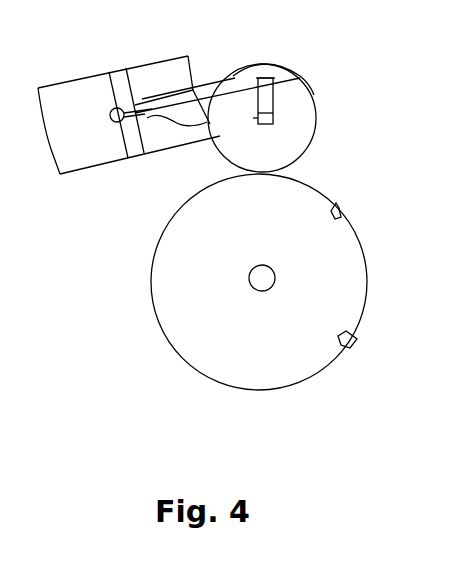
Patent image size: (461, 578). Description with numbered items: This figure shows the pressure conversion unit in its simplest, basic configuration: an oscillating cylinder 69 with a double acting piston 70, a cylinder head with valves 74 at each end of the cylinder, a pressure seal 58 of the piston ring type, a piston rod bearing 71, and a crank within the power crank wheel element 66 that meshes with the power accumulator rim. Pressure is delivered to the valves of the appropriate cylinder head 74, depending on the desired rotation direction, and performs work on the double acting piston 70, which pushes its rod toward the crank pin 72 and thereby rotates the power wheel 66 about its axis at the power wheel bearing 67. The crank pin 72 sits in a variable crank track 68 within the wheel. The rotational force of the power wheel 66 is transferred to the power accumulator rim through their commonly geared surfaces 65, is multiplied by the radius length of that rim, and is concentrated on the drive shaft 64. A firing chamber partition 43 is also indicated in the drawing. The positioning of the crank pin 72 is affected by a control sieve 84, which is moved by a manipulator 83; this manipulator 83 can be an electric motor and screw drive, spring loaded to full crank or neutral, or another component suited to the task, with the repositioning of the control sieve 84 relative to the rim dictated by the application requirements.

The firing chamber partition 43 is at (153, 263).
The pressure seal 58 is at (111, 113).
The drive shaft 64 is at (276, 278).
The geared surface 65 is at (247, 171).
The power crank wheel element 66 is at (307, 92).
The power wheel bearing 67 is at (277, 118).
The variable crank track 68 is at (300, 75).
The oscillating cylinder 69 is at (86, 165).
The piston 70 is at (153, 63).
The piston rod bearing 71 is at (246, 67).
The crank pin 72 is at (295, 62).
The cylinder head with valves 74 is at (52, 157).
The manipulator for control sieve movement 83 is at (358, 340).
The control sieve 84 is at (343, 205).